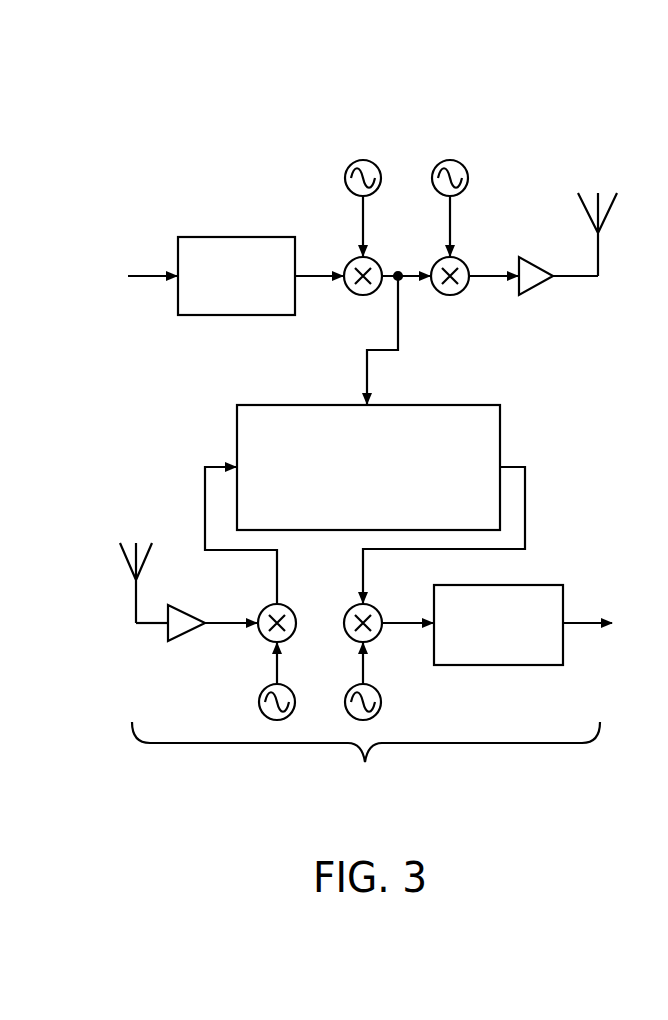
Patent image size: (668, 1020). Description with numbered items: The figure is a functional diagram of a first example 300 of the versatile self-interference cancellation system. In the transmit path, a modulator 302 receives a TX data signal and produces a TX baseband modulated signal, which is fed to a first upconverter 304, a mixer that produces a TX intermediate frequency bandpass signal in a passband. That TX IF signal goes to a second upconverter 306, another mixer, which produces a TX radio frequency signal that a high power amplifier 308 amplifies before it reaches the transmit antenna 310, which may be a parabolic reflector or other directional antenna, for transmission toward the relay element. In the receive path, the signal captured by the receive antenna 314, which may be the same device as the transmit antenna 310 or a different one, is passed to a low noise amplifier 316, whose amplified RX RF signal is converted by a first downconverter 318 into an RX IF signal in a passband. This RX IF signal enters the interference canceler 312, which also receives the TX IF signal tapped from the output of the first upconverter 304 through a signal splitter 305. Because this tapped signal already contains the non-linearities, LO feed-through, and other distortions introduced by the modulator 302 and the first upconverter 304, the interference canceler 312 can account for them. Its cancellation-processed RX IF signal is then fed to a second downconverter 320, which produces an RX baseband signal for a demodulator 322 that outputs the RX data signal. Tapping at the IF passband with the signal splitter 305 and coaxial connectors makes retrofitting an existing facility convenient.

The first example of the versatile self-interference cancellation system 300 is at (418, 104).
The modulator 302 is at (198, 237).
The first upconverter 304 is at (357, 298).
The signal splitter 305 is at (398, 268).
The second upconverter 306 is at (448, 298).
The high power amplifier 308 is at (530, 257).
The transmit antenna 310 is at (613, 202).
The interference canceler 312 is at (500, 435).
The receive antenna 314 is at (120, 550).
The low noise amplifier 316 is at (188, 610).
The first downconverter 318 is at (293, 610).
The second downconverter 320 is at (380, 610).
The demodulator 322 is at (523, 583).